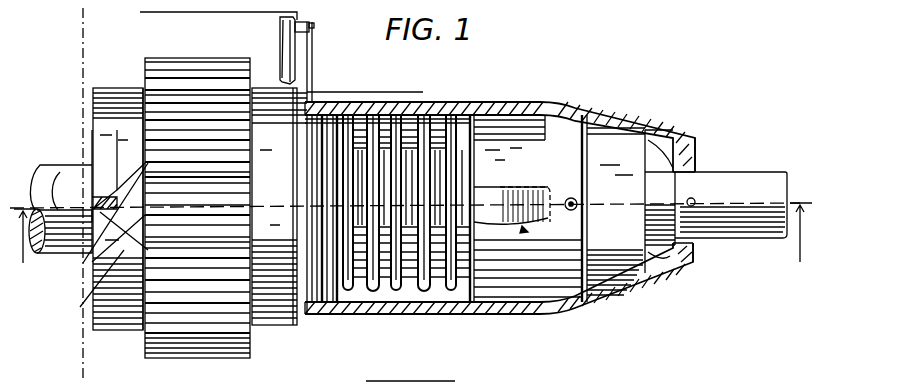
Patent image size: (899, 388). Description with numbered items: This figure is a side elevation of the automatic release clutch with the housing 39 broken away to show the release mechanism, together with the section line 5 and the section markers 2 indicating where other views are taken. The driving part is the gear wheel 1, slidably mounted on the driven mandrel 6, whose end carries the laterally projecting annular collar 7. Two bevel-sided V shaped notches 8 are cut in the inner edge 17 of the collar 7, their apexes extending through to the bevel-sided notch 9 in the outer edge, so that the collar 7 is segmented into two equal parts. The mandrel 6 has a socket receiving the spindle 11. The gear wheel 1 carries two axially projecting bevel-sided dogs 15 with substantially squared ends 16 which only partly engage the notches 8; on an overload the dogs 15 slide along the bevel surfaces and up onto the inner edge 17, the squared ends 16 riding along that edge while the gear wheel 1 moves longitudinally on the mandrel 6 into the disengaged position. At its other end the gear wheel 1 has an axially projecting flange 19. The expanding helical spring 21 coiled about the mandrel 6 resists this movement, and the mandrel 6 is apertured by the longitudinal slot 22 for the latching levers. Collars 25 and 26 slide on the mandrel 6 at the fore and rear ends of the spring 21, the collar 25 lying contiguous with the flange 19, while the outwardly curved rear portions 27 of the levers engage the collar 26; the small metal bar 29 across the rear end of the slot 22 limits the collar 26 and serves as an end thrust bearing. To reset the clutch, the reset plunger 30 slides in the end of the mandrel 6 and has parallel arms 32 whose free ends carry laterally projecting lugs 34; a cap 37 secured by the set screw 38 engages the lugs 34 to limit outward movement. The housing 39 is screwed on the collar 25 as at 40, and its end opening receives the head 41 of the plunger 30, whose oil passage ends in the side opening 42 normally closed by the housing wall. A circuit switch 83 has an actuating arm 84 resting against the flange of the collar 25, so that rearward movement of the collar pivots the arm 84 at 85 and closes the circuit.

The gear wheel 1 is at (145, 345).
The section line 2 is at (412, 249).
The section line 5 is at (73, 29).
The mandrel 6 is at (505, 128).
The annular collar 7 is at (110, 102).
The V shaped notches 8 is at (95, 273).
The bevel-sided notch 9 is at (103, 192).
The spindle 11 is at (100, 198).
The bevel-sided dogs 15 is at (97, 298).
The squared ends 16 is at (75, 253).
The inner edge 17 is at (141, 128).
The flange 19 is at (270, 318).
The expanding helical spring 21 is at (435, 115).
The longitudinal slot 22 is at (522, 222).
The collar 25 is at (352, 290).
The collar 26 is at (440, 290).
The outwardly curved rear portions 27 is at (497, 227).
The metal bar 29 is at (548, 222).
The reset plunger 30 is at (702, 223).
The parallel arms 32 is at (657, 160).
The lugs 34 is at (588, 122).
The cap 37 is at (622, 277).
The set screw 38 is at (577, 202).
The housing 39 is at (640, 115).
The screw connection 40 is at (327, 314).
The head 41 is at (790, 238).
The opening 42 is at (695, 203).
The circuit switch 83 is at (281, 45).
The actuating arm 84 is at (312, 78).
The pivot 85 is at (300, 53).